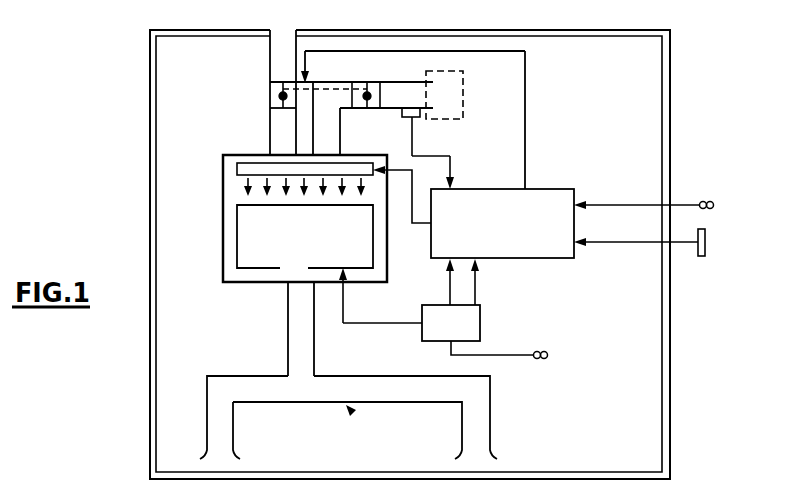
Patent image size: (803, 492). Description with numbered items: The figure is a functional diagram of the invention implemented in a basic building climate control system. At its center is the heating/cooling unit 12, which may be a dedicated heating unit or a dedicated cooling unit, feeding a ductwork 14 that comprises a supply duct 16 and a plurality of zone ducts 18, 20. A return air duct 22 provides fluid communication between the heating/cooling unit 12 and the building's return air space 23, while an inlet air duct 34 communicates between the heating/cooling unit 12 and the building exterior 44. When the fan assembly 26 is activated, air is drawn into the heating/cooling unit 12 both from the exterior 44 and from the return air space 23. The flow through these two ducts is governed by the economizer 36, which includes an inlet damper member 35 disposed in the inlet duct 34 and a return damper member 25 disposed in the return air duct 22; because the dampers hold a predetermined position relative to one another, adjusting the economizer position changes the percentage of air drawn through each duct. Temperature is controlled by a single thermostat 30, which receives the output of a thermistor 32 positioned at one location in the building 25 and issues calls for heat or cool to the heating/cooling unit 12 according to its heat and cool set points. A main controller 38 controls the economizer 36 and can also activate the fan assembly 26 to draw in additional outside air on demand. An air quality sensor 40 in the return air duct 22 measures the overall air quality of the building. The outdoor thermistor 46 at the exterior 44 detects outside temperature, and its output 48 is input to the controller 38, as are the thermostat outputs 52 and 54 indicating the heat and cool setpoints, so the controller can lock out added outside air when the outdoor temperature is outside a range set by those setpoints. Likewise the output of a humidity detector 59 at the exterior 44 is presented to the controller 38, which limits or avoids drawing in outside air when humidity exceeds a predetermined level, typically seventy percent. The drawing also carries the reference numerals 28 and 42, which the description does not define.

The heating/cooling unit 12 is at (224, 265).
The ductwork 14 is at (352, 413).
The supply duct 16 is at (288, 323).
The zone duct 18 is at (207, 441).
The zone duct 20 is at (493, 423).
The return air duct 22 is at (389, 82).
The return air space 23 is at (453, 88).
The return damper member 25 is at (357, 82).
The fan assembly 26 is at (237, 167).
The heating/cooling unit 28 is at (237, 228).
The thermostat 30 is at (482, 322).
The thermistor 32 is at (548, 350).
The inlet air duct 34 is at (270, 60).
The inlet damper member 35 is at (270, 98).
The economizer 36 is at (270, 88).
The main controller 38 is at (545, 189).
The air quality sensor 40 is at (413, 118).
The control line 42 is at (452, 160).
The building exterior 44 is at (737, 385).
The outdoor thermistor 46 is at (712, 200).
The output of outdoor thermistor 48 is at (605, 203).
The thermostat output 52 is at (448, 283).
The thermostat output 54 is at (475, 288).
The humidity detector 59 is at (707, 233).